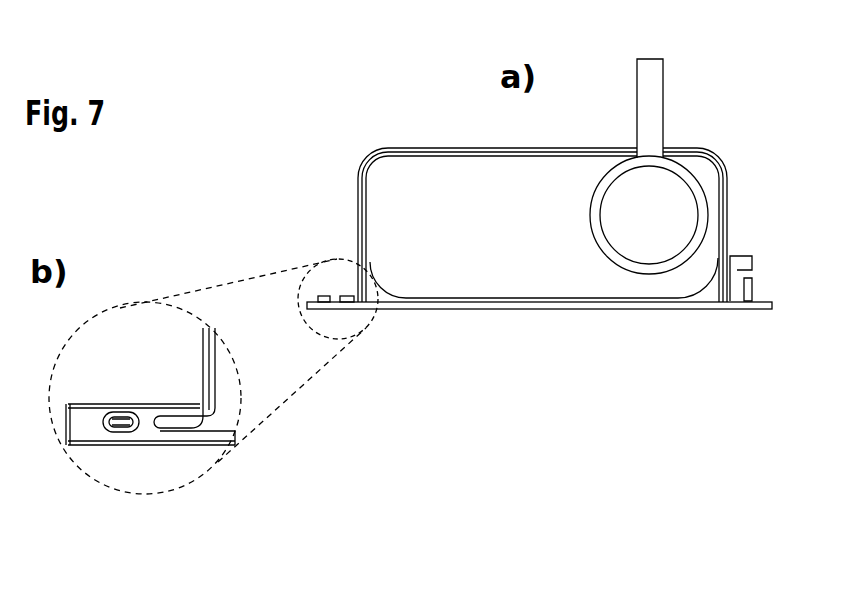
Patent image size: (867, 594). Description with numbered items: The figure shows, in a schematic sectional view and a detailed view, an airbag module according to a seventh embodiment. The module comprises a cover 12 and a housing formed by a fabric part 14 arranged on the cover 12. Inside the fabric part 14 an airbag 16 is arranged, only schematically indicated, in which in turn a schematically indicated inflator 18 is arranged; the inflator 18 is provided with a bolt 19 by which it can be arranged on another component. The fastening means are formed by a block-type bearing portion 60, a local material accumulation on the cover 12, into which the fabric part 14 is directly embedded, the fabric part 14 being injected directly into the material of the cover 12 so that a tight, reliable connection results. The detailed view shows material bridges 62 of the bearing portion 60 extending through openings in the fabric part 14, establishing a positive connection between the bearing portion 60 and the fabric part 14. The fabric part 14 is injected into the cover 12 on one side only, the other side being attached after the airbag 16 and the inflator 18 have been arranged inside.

The cover 12 is at (548, 310).
The fabric part 14 is at (376, 166).
The airbag 16 is at (693, 290).
The inflator 18 is at (690, 178).
The bolt 19 is at (652, 86).
The bearing portion 60 is at (338, 304).
The material bridges 62 is at (147, 433).